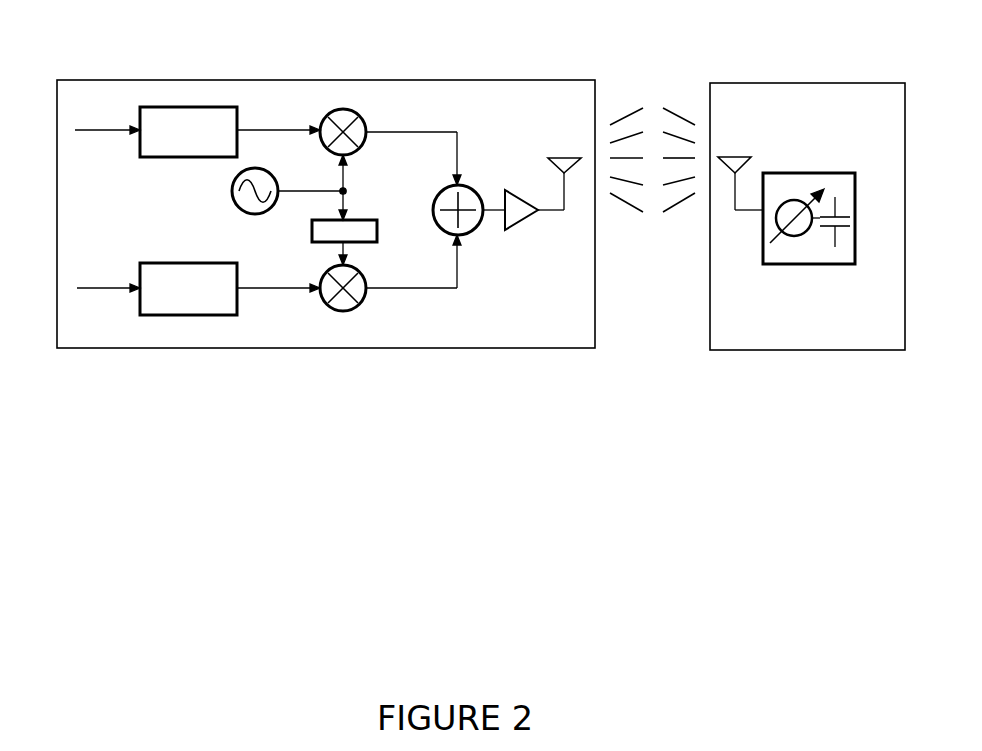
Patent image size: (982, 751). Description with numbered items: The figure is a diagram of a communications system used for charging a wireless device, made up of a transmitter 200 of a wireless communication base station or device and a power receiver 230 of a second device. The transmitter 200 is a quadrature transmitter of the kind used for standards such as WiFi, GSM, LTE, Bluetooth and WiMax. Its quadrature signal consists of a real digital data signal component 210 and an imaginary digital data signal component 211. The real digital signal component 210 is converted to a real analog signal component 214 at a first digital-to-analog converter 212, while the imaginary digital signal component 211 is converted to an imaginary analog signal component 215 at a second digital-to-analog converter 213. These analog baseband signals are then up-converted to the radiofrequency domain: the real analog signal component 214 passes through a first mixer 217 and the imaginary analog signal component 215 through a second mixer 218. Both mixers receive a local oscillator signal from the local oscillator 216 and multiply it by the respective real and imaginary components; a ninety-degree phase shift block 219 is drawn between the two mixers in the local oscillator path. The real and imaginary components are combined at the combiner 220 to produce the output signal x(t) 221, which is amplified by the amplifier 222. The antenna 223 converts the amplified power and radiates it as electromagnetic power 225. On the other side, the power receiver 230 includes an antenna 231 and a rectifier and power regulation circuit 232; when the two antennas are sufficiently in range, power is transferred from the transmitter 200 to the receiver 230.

The transmitter 200 is at (90, 62).
The real digital data signal component 210 is at (115, 106).
The imaginary digital data signal component 211 is at (119, 309).
The first digital-to-analog converter 212 is at (182, 139).
The second digital-to-analog converter 213 is at (182, 296).
The real analog signal component 214 is at (272, 106).
The imaginary analog signal component 215 is at (272, 309).
The local oscillator 216 is at (207, 198).
The first mixer 217 is at (355, 102).
The second mixer 218 is at (355, 332).
The 90 degree phase shifter 219 is at (342, 238).
The combiner 220 is at (440, 190).
The output signal x(t) 221 is at (500, 172).
The amplifier 222 is at (540, 197).
The antenna 223 is at (575, 152).
The electromagnetic power 225 is at (652, 96).
The power receiver 230 is at (800, 68).
The antenna 231 is at (744, 152).
The rectifier and power regulation circuit 232 is at (808, 194).